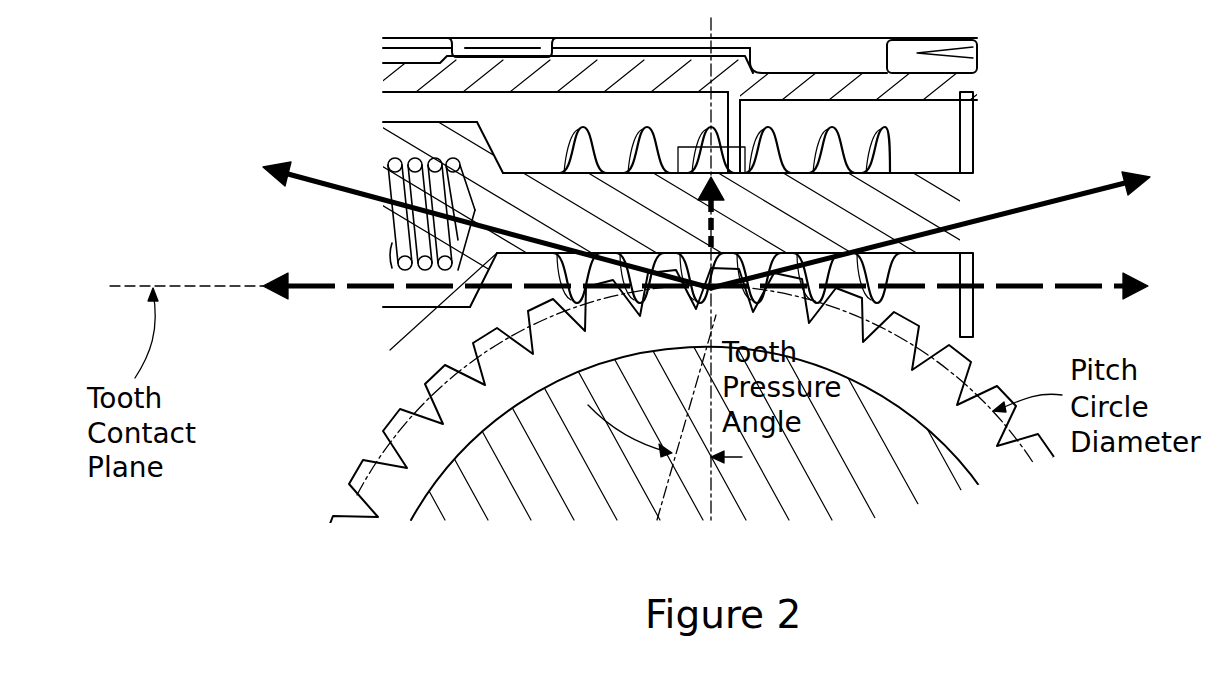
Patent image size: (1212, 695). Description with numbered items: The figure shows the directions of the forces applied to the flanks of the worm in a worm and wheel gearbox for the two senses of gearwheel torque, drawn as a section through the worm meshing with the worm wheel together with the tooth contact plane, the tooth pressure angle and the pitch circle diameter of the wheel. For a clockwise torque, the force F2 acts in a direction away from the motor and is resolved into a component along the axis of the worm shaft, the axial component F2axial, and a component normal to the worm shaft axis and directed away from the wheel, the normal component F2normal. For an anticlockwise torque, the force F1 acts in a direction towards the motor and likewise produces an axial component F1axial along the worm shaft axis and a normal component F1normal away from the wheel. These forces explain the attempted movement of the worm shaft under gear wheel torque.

The force F1 is at (487, 207).
The force F2 is at (946, 213).
The axial component of force F1 F1axial is at (481, 269).
The axial component of force F2 F2axial is at (924, 274).
The normal component of force F1 F1normal is at (644, 212).
The normal component of force F2 F2normal is at (781, 219).